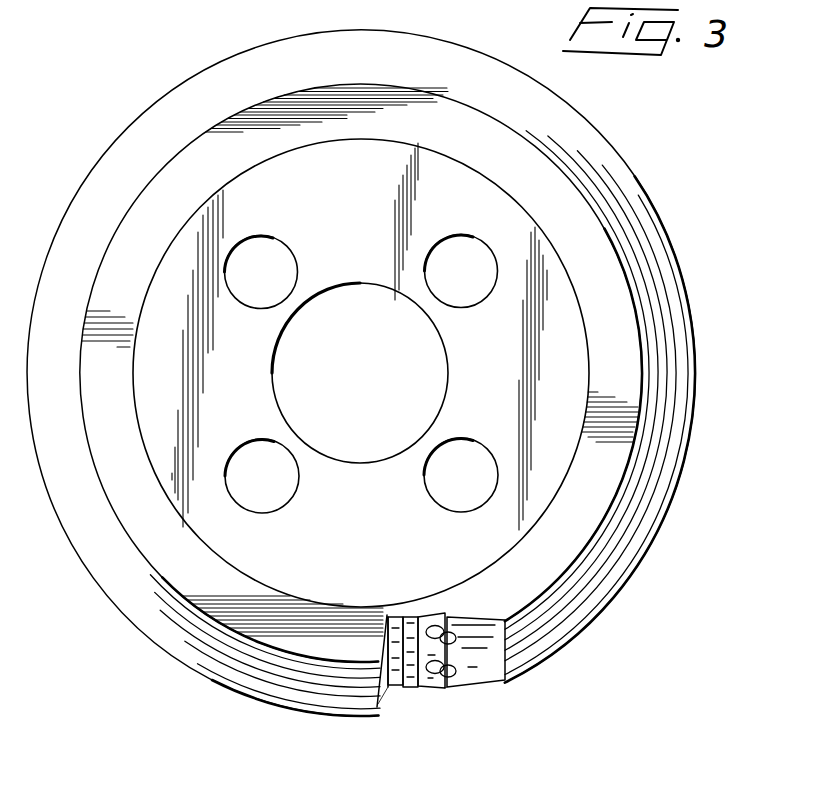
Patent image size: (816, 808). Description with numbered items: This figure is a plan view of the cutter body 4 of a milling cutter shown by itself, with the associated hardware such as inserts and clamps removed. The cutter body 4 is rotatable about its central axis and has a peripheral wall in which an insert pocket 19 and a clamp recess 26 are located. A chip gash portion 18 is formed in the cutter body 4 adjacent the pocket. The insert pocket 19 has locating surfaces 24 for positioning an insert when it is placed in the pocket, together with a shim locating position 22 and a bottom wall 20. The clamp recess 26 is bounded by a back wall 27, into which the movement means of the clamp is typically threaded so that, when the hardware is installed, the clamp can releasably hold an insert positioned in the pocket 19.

The cutter body 4 is at (371, 519).
The chip gash portion 18 is at (482, 655).
The insert pocket 19 is at (392, 702).
The bottom wall 20 is at (379, 706).
The shim locating position 22 is at (394, 642).
The locating surfaces 24 is at (412, 623).
The clamp recess 26 is at (441, 690).
The back wall 27 is at (425, 620).